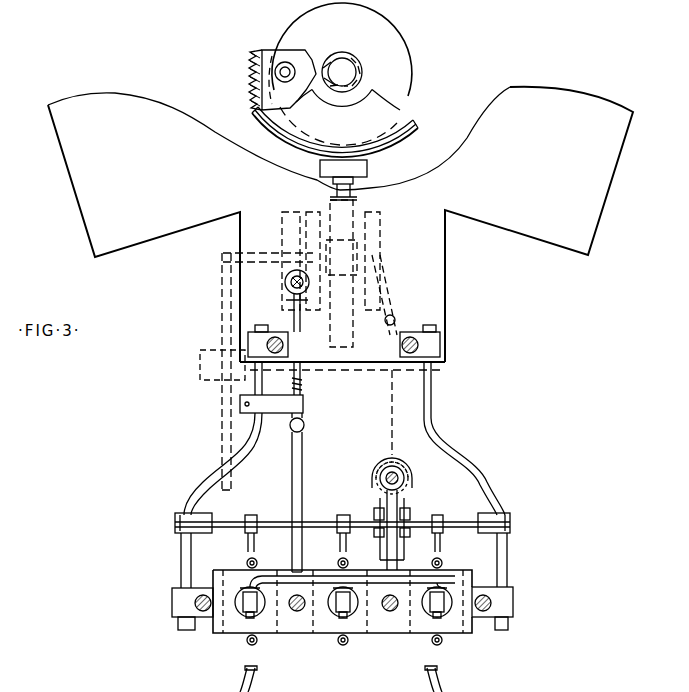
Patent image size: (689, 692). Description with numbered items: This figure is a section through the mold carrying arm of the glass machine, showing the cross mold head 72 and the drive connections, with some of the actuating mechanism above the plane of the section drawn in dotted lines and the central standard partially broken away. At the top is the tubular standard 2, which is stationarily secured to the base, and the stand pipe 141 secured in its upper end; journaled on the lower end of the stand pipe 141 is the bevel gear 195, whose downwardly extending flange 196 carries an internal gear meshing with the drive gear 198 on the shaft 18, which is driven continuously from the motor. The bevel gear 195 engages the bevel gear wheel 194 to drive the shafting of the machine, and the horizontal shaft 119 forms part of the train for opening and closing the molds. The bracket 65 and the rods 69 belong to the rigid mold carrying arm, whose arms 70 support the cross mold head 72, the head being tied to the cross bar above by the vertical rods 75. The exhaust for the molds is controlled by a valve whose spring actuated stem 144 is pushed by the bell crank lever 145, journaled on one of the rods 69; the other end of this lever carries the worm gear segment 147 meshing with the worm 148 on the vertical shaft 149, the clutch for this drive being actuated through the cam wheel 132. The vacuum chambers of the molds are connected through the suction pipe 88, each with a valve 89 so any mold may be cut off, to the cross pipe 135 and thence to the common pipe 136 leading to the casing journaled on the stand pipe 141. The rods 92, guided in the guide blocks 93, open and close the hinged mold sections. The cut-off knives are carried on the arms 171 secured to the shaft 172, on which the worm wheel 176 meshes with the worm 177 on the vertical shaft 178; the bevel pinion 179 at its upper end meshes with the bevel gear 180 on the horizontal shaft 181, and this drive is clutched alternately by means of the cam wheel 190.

The tubular standard 2 is at (393, 48).
The shaft 18 is at (289, 68).
The stand pipe 141 is at (363, 72).
The drive gear 198 is at (262, 70).
The downwardly extending flange 196 is at (250, 92).
The bevel gear 195 is at (419, 130).
The bevel gear wheel 194 is at (350, 170).
The bracket 65 is at (340, 228).
The cam wheel 132 is at (283, 227).
The cam wheel 190 is at (372, 230).
The vertical shaft 149 is at (287, 283).
The worm 148 is at (290, 288).
The worm gear segment 147 is at (262, 327).
The rods 69 is at (248, 348).
The horizontal shaft 119 is at (226, 428).
The bell crank lever 145 is at (306, 373).
The spring actuated stem 144 is at (304, 390).
The common pipe 136 is at (303, 440).
The arms 70 is at (212, 470).
The horizontal shaft 181 is at (396, 412).
The bevel gear 180 is at (398, 464).
The worm 177 is at (404, 470).
The vertical shaft 178 is at (405, 479).
The bevel pinion 179 is at (376, 478).
The worm wheel 176 is at (406, 508).
The shaft 172 is at (462, 522).
The arms 171 is at (244, 540).
The cross mold head 72 is at (456, 620).
The cross pipe 135 is at (326, 570).
The suction pipe 88 is at (242, 607).
The valve 89 is at (335, 610).
The rods 92 is at (256, 562).
The guide blocks 93 is at (247, 565).
The vertical rods 75 is at (196, 603).